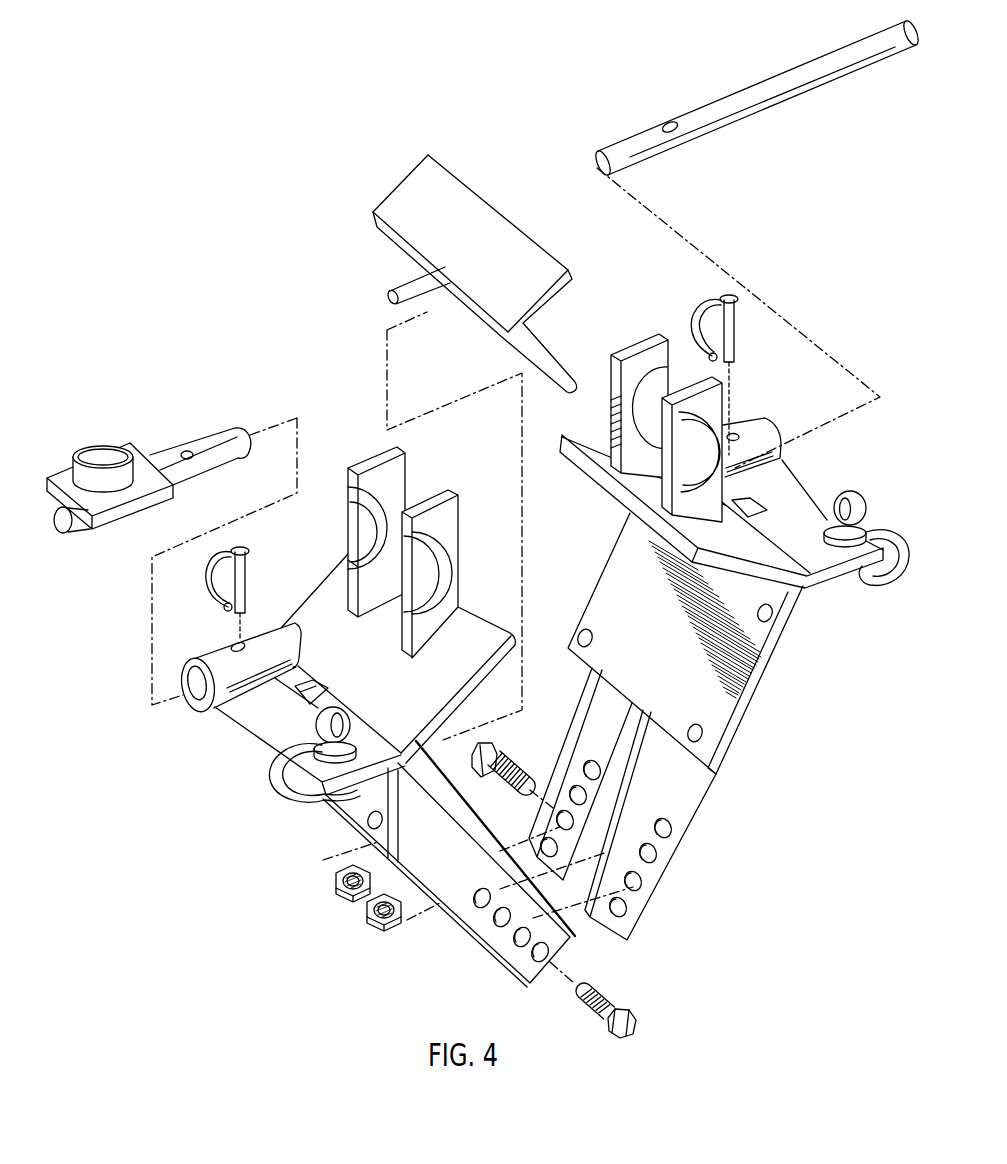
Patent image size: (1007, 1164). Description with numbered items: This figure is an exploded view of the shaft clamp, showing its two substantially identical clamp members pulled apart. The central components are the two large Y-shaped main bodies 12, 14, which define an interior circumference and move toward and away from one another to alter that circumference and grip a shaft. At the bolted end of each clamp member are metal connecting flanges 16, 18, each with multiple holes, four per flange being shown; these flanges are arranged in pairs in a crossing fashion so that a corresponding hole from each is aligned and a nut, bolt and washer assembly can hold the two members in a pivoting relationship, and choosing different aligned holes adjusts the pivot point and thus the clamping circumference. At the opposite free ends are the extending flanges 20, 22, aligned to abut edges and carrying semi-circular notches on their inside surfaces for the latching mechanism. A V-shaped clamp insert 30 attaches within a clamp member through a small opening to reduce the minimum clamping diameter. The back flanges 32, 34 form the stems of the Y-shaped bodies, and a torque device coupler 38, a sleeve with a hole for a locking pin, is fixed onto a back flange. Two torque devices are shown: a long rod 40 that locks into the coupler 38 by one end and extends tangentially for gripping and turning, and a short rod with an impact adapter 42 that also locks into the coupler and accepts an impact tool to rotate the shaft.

The Y-shaped main body 12 is at (768, 656).
The Y-shaped main body 14 is at (362, 665).
The connecting flange 16 is at (707, 803).
The connecting flange 18 is at (347, 833).
The extending flange 20 is at (688, 378).
The extending flange 22 is at (457, 518).
The clamp insert 30 is at (403, 203).
The back flange 32 is at (815, 556).
The back flange 34 is at (216, 700).
The torque device coupler 38 is at (758, 442).
The long rod 40 is at (815, 86).
The short rod with impact adapter 42 is at (149, 463).